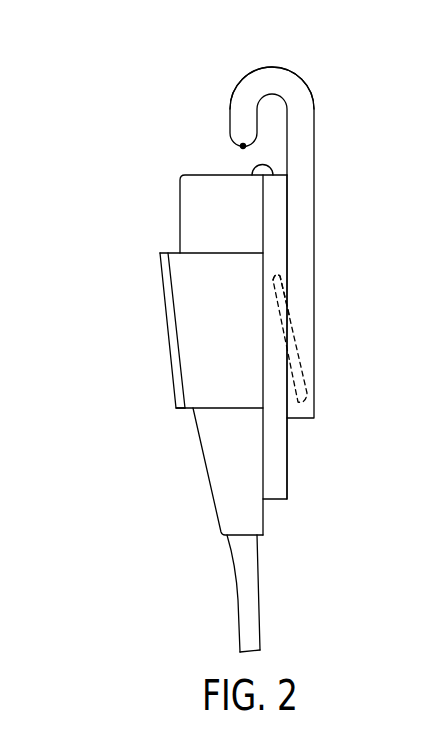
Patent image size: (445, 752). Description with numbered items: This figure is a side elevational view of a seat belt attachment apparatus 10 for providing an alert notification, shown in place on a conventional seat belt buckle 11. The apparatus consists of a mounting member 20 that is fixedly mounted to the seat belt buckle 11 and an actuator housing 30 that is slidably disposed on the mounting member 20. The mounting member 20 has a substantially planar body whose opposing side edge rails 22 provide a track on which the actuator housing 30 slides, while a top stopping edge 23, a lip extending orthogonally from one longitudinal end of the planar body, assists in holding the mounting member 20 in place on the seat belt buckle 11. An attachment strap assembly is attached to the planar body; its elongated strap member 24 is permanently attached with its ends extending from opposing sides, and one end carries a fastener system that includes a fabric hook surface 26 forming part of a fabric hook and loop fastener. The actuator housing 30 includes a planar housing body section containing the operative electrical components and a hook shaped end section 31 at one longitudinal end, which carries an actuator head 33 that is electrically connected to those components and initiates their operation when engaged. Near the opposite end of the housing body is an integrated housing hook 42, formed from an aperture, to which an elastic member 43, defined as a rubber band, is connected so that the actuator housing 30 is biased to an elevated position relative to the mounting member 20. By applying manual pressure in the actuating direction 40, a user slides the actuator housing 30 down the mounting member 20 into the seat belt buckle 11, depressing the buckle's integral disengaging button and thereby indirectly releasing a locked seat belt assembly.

The seat belt attachment apparatus 10 is at (203, 400).
The seat belt buckle 11 is at (186, 210).
The mounting member 20 is at (273, 479).
The edge rails 22 is at (288, 449).
The top stopping edge 23 is at (256, 172).
The strap member 24 is at (193, 379).
The fabric hook surface 26 is at (172, 321).
The actuator housing 30 is at (303, 208).
The hook shaped end section 31 is at (273, 68).
The actuator head 33 is at (240, 145).
The actuating direction 40 is at (282, 260).
The housing hook 42 is at (308, 396).
The elastic member 43 is at (292, 343).